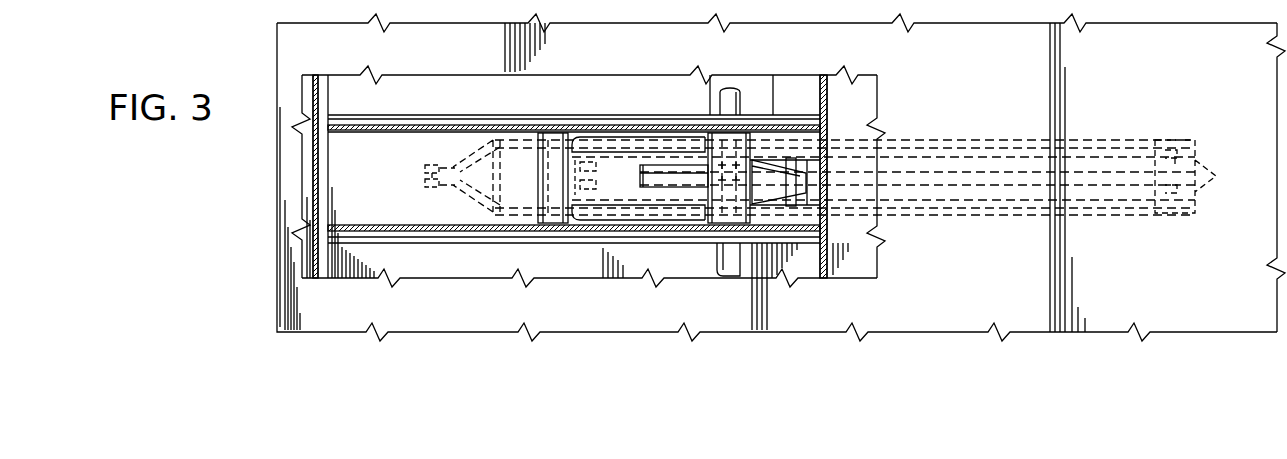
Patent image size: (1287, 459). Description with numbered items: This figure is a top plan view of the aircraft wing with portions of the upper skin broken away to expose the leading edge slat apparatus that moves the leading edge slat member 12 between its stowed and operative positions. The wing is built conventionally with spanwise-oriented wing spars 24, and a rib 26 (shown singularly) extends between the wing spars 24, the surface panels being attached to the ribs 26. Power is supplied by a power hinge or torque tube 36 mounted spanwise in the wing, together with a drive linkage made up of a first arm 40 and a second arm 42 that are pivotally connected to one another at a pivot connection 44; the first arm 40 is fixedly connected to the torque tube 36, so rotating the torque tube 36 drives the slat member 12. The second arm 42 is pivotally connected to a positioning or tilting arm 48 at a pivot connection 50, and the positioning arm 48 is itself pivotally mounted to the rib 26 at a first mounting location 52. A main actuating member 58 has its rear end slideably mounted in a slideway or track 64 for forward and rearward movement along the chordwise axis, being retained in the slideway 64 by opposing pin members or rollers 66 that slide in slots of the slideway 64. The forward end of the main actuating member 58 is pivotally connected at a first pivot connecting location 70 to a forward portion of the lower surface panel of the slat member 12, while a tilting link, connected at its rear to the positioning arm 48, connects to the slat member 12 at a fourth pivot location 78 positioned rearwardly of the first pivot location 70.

The leading edge slat member 12 is at (420, 106).
The wing spars 24 is at (317, 173).
The ribs 26 is at (449, 127).
The power hinge or torque tube 36 is at (728, 90).
The first arm 40 is at (764, 180).
The second arm 42 is at (669, 178).
The pivot connection 44 is at (792, 210).
The positioning or tilting arm 48 is at (611, 165).
The pivot connection 50 is at (641, 163).
The first mounting location 52 is at (552, 120).
The main actuating member 58 is at (936, 147).
The slideway or track 64 is at (1002, 165).
The pin members or rollers 66 is at (1200, 178).
The first pivot connecting location 70 is at (441, 170).
The fourth pivot location 78 is at (605, 170).